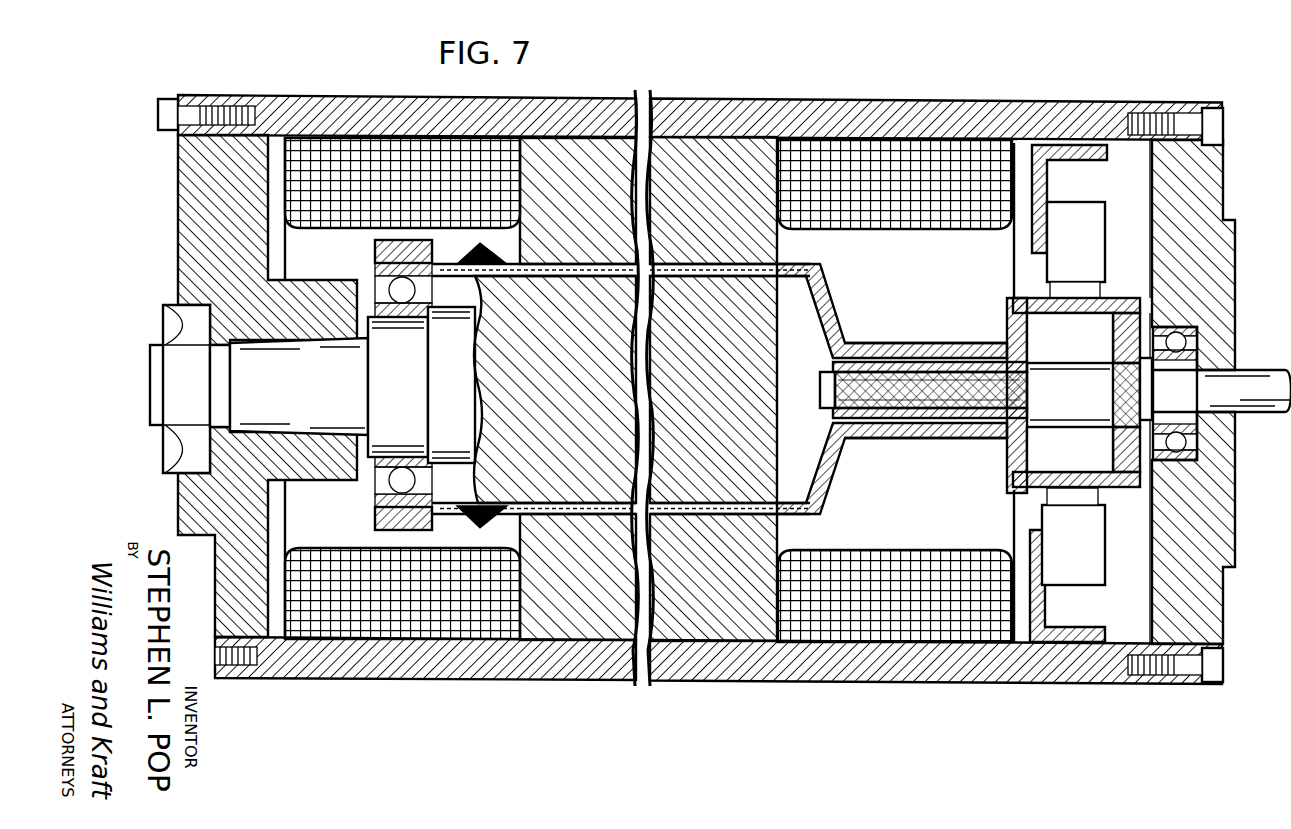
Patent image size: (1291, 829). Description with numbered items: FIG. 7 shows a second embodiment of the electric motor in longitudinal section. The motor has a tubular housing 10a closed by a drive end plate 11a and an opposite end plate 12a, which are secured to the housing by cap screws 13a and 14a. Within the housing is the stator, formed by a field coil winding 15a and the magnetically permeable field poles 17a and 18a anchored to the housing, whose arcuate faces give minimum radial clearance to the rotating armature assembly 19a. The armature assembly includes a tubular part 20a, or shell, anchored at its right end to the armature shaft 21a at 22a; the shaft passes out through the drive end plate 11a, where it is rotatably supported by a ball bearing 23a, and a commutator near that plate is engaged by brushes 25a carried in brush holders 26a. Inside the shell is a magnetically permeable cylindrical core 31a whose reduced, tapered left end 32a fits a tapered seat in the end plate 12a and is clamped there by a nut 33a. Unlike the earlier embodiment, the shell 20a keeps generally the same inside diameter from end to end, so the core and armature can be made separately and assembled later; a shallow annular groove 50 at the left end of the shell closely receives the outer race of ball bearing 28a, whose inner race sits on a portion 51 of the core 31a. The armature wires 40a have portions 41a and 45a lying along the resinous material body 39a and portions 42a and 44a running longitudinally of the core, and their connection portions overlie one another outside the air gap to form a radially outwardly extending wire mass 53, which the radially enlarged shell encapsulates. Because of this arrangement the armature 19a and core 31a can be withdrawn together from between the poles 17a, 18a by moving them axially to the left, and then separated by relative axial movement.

The tubular housing 10a is at (850, 122).
The drive end plate 11a is at (1196, 195).
The end plate 12a is at (192, 232).
The cap screw 13a is at (1208, 118).
The cap screw 14a is at (165, 104).
The field coil winding 15a is at (942, 160).
The field pole 17a is at (702, 152).
The field pole 18a is at (720, 655).
The armature assembly 19a is at (850, 342).
The tubular part of armature shell 20a is at (806, 270).
The armature shaft 21a is at (1242, 368).
The anchorage of shell to shaft 22a is at (922, 408).
The ball bearing 23a is at (1185, 327).
The brush 25a is at (1076, 495).
The brush holder 26a is at (1046, 178).
The ball bearing 28a is at (375, 282).
The cylindrical core 31a is at (752, 378).
The reduced left end of core 32a is at (318, 396).
The nut 33a is at (185, 442).
The resinous material body 39a is at (992, 420).
The armature wire 40a is at (806, 476).
The wire portion 41a is at (946, 420).
The wire portion 42a is at (553, 516).
The wire portion 44a is at (546, 262).
The wire portion 45a is at (930, 352).
The shallow annular groove 50 is at (373, 508).
The core portion 51 is at (408, 397).
The wire mass 53 is at (468, 540).